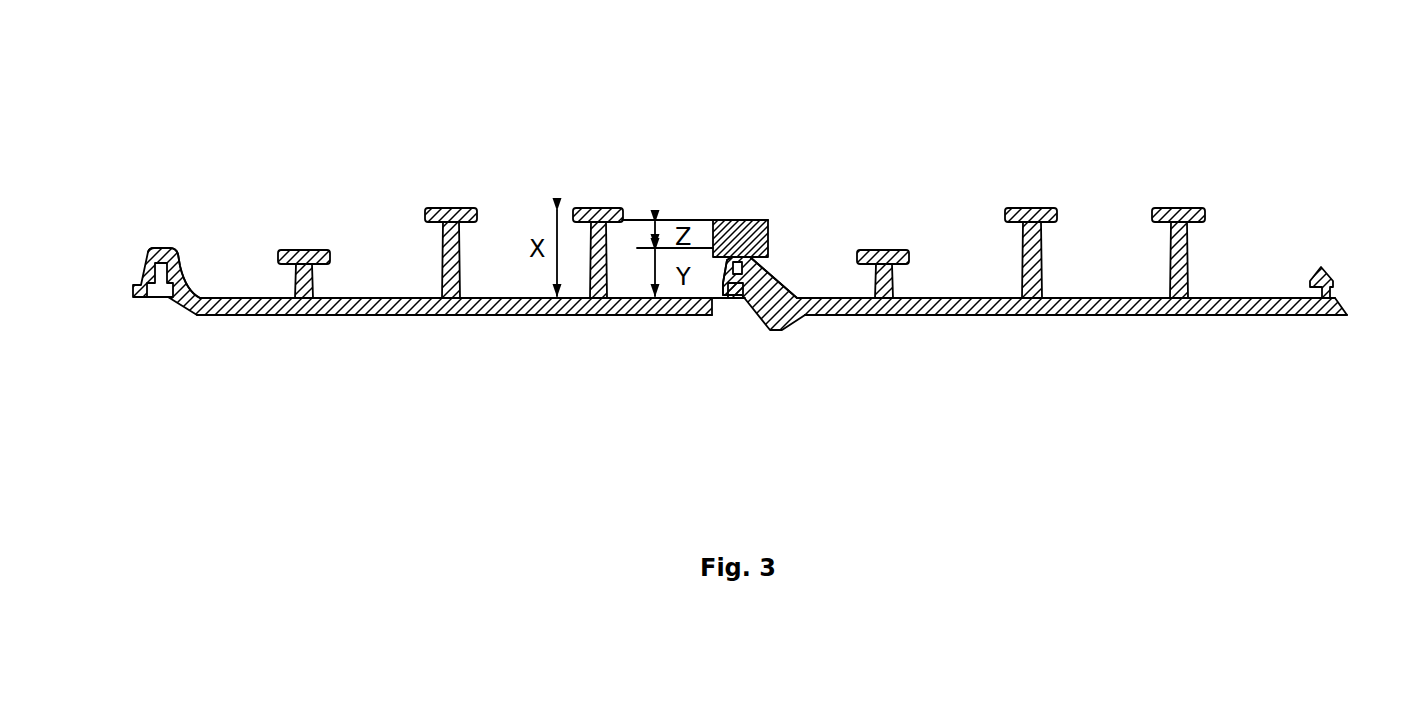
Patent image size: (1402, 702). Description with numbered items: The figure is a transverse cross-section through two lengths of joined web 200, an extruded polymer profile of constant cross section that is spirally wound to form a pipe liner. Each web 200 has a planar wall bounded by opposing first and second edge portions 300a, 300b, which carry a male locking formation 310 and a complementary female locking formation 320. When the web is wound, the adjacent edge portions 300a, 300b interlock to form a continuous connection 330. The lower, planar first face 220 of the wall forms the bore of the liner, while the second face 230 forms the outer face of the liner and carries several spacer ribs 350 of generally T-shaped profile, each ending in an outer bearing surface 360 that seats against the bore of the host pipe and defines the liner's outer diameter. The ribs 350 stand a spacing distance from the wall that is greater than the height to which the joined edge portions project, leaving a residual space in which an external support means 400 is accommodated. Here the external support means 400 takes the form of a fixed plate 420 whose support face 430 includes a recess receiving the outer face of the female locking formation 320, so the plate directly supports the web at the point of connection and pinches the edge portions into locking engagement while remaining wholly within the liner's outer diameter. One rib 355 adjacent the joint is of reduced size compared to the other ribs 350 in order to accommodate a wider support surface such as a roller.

The web 200 is at (745, 393).
The first face 220 is at (377, 317).
The second face 230 is at (395, 298).
The first edge portion 300a is at (758, 318).
The second edge portion 300b is at (133, 298).
The male locking formation 310 is at (1320, 265).
The female locking formation 320 is at (171, 244).
The continuous connection 330 is at (748, 318).
The spacer rib 350 is at (433, 196).
The reduced rib 355 is at (307, 246).
The outer bearing surface 360 is at (455, 208).
The external support means 400 is at (777, 163).
The fixed plate 420 is at (740, 220).
The support face 430 is at (752, 220).